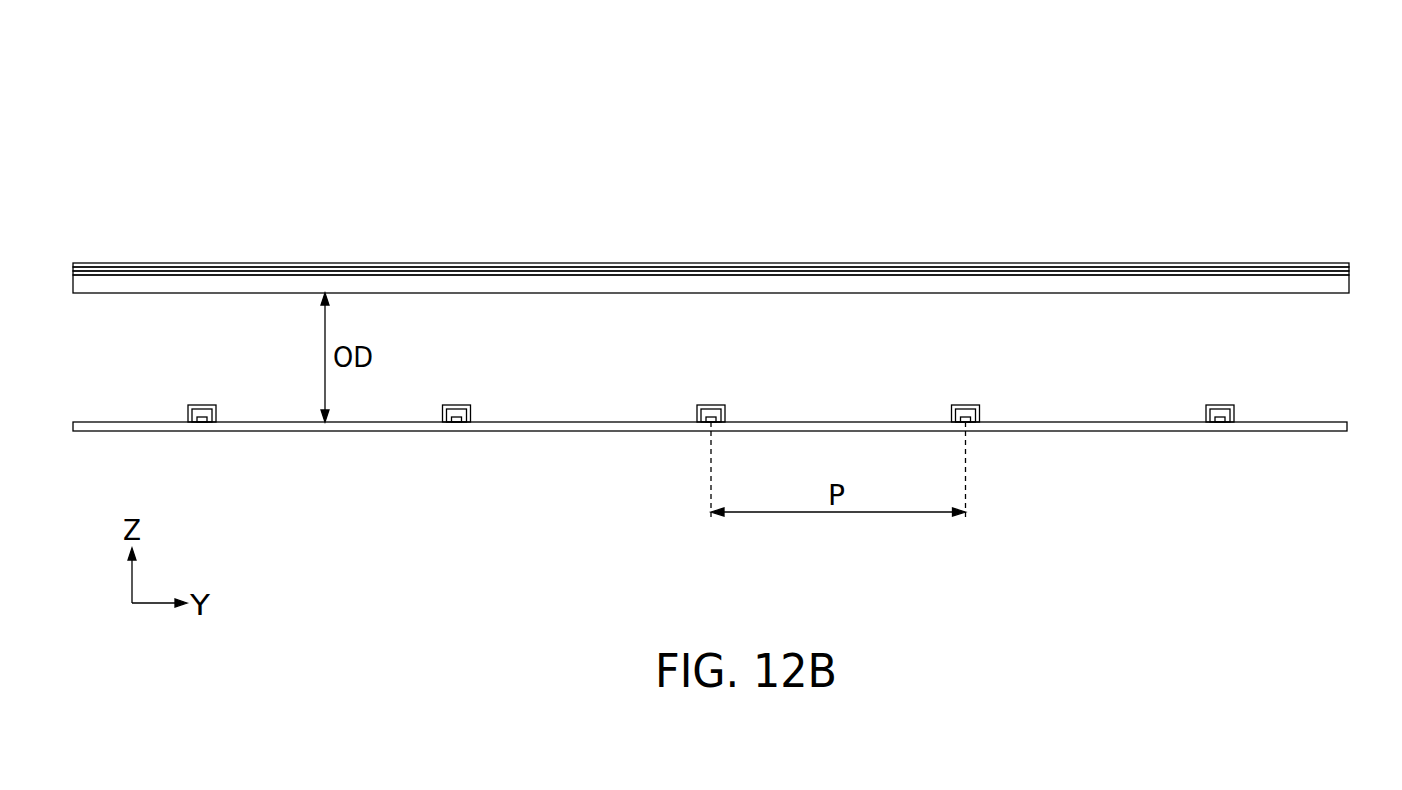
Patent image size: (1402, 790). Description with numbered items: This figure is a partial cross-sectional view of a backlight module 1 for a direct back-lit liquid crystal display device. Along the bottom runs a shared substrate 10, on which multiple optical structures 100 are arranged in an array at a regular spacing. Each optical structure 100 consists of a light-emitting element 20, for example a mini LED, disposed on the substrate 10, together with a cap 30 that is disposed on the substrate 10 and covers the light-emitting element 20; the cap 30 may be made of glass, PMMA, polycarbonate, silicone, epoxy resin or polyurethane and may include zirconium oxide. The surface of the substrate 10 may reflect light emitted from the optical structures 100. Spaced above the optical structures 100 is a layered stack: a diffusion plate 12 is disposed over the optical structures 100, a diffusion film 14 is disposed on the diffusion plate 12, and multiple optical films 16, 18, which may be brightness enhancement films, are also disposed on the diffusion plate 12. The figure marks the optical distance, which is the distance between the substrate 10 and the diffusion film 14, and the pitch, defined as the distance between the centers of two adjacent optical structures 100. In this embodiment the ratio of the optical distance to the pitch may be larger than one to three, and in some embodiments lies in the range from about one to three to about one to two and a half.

The backlight module 1 is at (127, 80).
The substrate 10 is at (1341, 427).
The diffusion plate 12 is at (1300, 284).
The diffusion film 14 is at (1323, 277).
The optical film 16 is at (1349, 269).
The optical film 18 is at (1333, 263).
The light-emitting element 20 is at (1222, 424).
The cap 30 is at (1234, 413).
The optical structure 100 is at (740, 408).